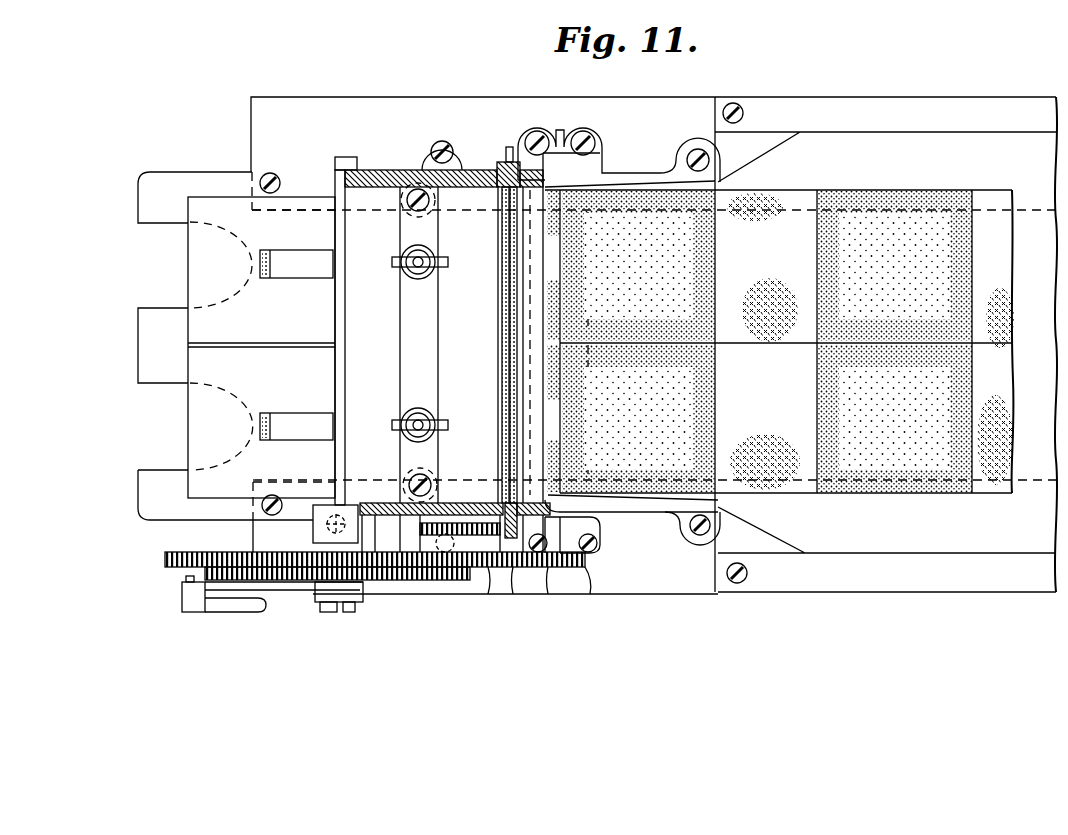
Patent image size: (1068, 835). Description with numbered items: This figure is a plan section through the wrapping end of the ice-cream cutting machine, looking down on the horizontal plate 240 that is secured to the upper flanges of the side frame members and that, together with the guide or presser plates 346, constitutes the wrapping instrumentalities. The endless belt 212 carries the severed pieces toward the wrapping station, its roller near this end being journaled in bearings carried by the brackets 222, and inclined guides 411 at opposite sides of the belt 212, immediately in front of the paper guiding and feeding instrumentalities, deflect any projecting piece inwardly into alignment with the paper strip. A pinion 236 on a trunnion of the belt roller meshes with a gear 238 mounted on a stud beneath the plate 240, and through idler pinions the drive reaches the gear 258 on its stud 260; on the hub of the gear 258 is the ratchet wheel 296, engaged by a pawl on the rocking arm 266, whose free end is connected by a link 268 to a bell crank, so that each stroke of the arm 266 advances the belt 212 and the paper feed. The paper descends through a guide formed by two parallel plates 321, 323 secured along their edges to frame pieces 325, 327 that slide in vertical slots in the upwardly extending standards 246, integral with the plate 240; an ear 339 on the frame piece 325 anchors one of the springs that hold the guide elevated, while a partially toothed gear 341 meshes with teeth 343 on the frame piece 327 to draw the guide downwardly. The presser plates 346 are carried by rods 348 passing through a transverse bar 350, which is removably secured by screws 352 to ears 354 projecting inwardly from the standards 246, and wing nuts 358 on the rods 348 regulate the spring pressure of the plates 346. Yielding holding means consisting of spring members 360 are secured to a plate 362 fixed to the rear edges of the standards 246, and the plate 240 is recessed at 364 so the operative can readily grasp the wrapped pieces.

The endless belt 212 is at (993, 490).
The brackets 222 is at (600, 548).
The pinion 236 is at (605, 595).
The gear 238 is at (555, 595).
The horizontal plate 240 is at (150, 196).
The standards 246 is at (400, 168).
The gear 258 is at (165, 557).
The stud 260 is at (347, 614).
The arm 266 is at (245, 606).
The link 268 is at (212, 616).
The ratchet wheel 296 is at (296, 600).
The plate 321 is at (512, 200).
The plate 323 is at (533, 200).
The frame piece 325 is at (502, 170).
The frame piece 327 is at (515, 585).
The ear 339 is at (508, 147).
The gear 341 is at (465, 515).
The teeth 343 is at (490, 595).
The guide or presser plates 346 is at (347, 200).
The rods 348 is at (408, 258).
The transverse bar 350 is at (405, 320).
The screws 352 is at (412, 189).
The ears 354 is at (437, 203).
The wing nuts 358 is at (400, 423).
The spring members 360 is at (290, 258).
The plate 362 is at (338, 318).
The recess 364 is at (147, 293).
The inclined guides 411 is at (618, 188).